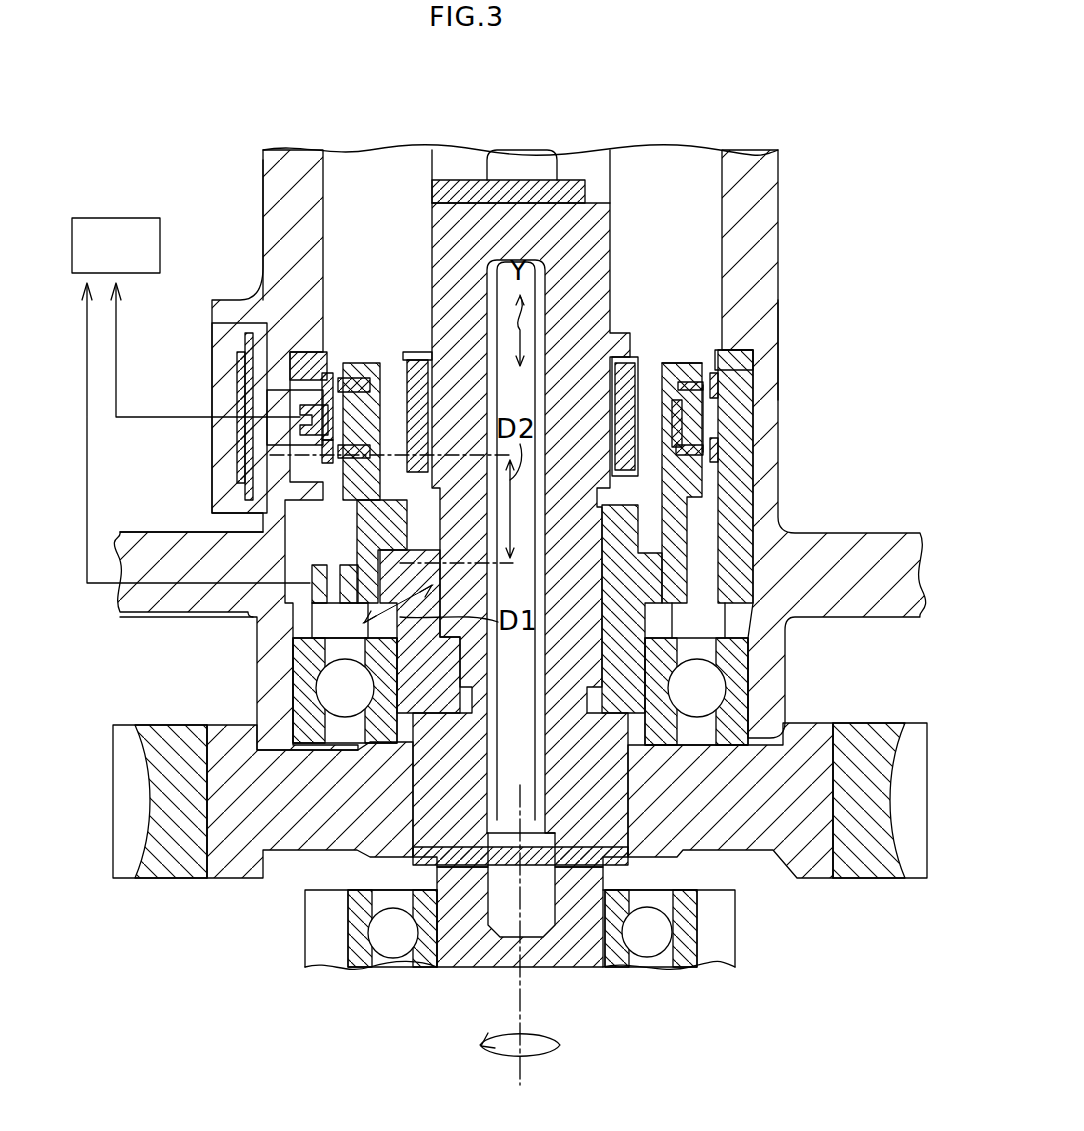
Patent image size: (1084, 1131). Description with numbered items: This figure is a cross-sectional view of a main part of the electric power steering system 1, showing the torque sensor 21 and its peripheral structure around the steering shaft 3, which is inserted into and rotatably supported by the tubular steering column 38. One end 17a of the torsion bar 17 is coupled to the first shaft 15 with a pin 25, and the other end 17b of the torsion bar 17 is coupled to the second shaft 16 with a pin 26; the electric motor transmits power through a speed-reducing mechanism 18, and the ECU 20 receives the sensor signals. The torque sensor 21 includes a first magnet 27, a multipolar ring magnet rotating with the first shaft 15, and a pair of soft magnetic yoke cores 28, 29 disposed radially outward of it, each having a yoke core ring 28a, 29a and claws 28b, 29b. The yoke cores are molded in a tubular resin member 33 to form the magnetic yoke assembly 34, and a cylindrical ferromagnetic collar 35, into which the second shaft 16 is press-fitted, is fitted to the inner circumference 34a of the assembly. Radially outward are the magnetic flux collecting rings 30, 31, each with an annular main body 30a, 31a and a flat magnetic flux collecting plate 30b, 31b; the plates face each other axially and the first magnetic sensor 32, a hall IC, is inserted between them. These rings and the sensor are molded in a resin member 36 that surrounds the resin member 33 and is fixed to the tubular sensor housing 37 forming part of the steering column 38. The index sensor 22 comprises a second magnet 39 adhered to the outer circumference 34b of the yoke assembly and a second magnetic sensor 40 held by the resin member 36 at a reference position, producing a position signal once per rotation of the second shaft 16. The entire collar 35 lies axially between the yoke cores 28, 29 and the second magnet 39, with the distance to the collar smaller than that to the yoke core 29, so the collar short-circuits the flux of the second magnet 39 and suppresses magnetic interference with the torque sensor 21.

The motor unit 1 is at (750, 128).
The steering shaft 3 is at (612, 170).
The first shaft 15 is at (470, 162).
The second shaft 16 is at (457, 958).
The torsion bar 17 is at (550, 610).
The one end of the torsion bar 17a is at (540, 235).
The other end of the torsion bar 17b is at (540, 905).
The speed-reducing mechanism 18 is at (868, 885).
The ECU 20 is at (118, 216).
The torque sensor 21 is at (676, 362).
The index sensor 22 is at (265, 654).
The pin 25 is at (585, 192).
The pin 26 is at (600, 860).
The first magnet 27 is at (624, 378).
The magnetic yoke core 28 is at (690, 372).
The yoke core ring 28a is at (418, 362).
The claws 28b is at (325, 356).
The magnetic yoke core 29 is at (678, 412).
The yoke core ring 29a is at (690, 452).
The claws 29b is at (688, 400).
The magnetic flux collecting ring 30 is at (722, 386).
The annular main body 30a is at (290, 380).
The magnetic flux collecting plate 30b is at (300, 395).
The magnetic flux collecting ring 31 is at (722, 450).
The annular main body 31a is at (328, 455).
The magnetic flux collecting plate 31b is at (300, 440).
The first magnetic sensor 32 is at (300, 415).
The tubular resin member 33 is at (690, 412).
The magnetic yoke assembly 34 is at (728, 366).
The inner circumference of the magnetic yoke assembly 34a is at (378, 392).
The outer circumference of the magnetic yoke assembly 34b is at (392, 545).
The collar 35 is at (385, 548).
The resin member 36 is at (248, 360).
The sensor housing 37 is at (270, 232).
The steering column 38 is at (262, 180).
The second magnet 39 is at (345, 595).
The second magnetic sensor 40 is at (312, 585).